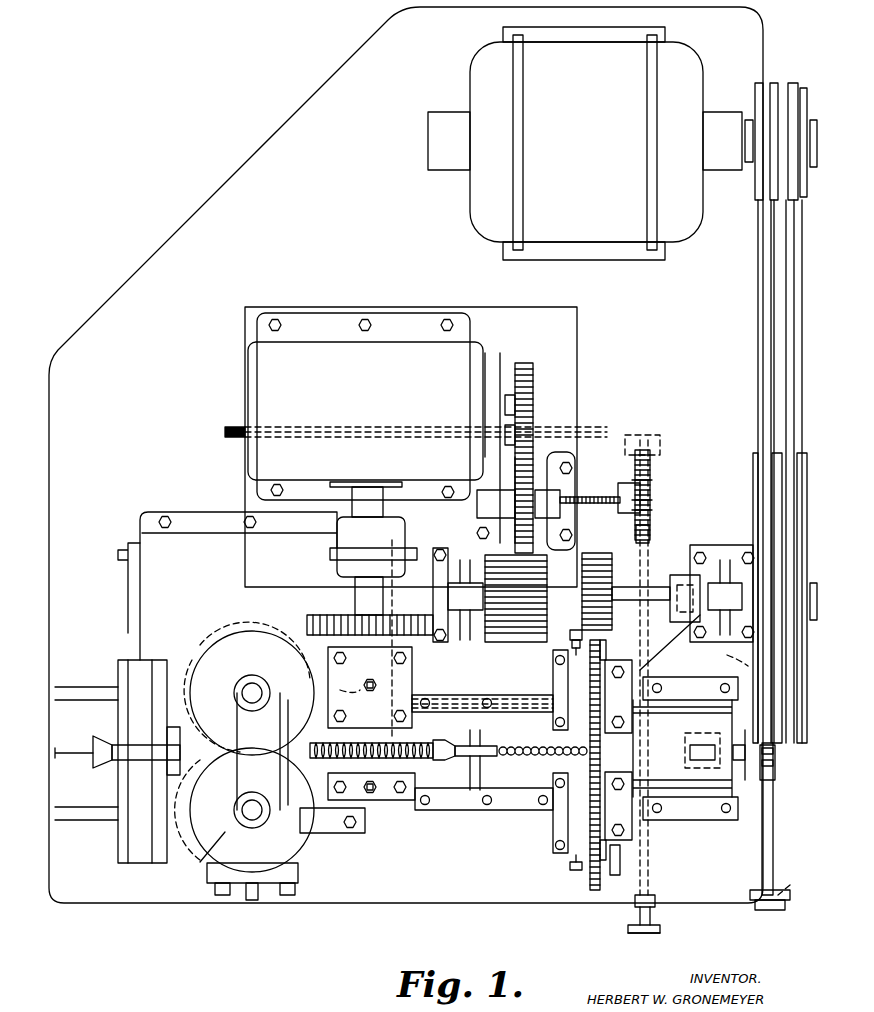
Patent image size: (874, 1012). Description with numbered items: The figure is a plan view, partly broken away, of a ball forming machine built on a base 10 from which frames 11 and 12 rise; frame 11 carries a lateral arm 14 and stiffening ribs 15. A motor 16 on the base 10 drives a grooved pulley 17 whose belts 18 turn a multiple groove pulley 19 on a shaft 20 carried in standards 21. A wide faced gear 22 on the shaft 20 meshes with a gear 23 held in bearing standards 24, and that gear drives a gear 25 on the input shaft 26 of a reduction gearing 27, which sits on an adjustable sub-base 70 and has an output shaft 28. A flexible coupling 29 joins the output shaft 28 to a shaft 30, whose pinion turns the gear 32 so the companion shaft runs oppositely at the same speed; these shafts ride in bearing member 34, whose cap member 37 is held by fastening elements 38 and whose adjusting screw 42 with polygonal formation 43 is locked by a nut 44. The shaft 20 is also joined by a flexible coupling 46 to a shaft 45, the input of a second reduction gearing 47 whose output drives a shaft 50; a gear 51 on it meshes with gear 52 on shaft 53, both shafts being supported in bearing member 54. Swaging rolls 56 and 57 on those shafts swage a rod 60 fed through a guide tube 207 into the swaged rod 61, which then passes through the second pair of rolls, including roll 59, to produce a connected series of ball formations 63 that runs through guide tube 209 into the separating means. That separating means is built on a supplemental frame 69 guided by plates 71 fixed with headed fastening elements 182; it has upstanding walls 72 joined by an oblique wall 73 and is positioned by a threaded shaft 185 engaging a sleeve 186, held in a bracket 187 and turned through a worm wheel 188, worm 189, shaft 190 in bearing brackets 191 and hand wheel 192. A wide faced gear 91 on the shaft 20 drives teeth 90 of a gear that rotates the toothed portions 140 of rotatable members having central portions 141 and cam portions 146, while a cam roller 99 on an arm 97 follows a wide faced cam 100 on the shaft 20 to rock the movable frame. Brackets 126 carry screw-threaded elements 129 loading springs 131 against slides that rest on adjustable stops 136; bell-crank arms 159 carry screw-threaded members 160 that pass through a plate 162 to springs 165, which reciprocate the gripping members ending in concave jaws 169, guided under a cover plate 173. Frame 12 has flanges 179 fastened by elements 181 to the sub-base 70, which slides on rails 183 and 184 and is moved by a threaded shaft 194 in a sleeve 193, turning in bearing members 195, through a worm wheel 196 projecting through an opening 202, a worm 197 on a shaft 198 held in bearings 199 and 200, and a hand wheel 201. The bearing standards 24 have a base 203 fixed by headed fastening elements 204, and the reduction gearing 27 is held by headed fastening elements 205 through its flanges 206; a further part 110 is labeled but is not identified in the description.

The base 10 is at (240, 162).
The frame 11 is at (135, 795).
The frame 12 is at (487, 695).
The lateral arm 14 is at (170, 712).
The ribs 15 is at (88, 686).
The motor 16 is at (472, 200).
The pulley 17 is at (755, 192).
The belts 18 is at (775, 312).
The multiple groove pulley 19 is at (753, 460).
The shaft 20 is at (612, 592).
The standards 21 is at (455, 550).
The wide faced gear 22 is at (540, 585).
The gear 23 is at (566, 458).
The bearing standards 24 is at (485, 490).
The gear 25 is at (530, 430).
The input shaft 26 is at (534, 398).
The reduction gearing 27 is at (265, 382).
The output shaft 28 is at (368, 495).
The flexible coupling 29 is at (337, 553).
The shaft 30 is at (365, 590).
The gear 32 is at (307, 618).
The bearing member 34 is at (400, 670).
The cap member 37 is at (330, 775).
The fastening elements 38 is at (335, 655).
The screw-threaded member 42 is at (252, 902).
The polygonal formation 43 is at (370, 832).
The nut 44 is at (364, 682).
The shaft 45 is at (380, 602).
The flexible coupling 46 is at (442, 552).
The reduction gearing 47 is at (195, 545).
The shaft 50 is at (252, 675).
The gear 51 is at (192, 655).
The gear 52 is at (190, 830).
The shaft 53 is at (262, 815).
The bearing member 54 is at (298, 872).
The roll 56 is at (240, 640).
The roll 57 is at (206, 860).
The roll 59 is at (422, 760).
The bar-like member 60 is at (70, 750).
The swaged rod-like member 61 is at (292, 705).
The series of connected ball formations 63 is at (500, 746).
The supplemental frame 69 is at (735, 790).
The adjustable sub-base 70 is at (560, 345).
The plates 71 is at (700, 692).
The upstanding walls 72 is at (680, 718).
The obliquely extending wall 73 is at (732, 690).
The teeth 90 is at (605, 750).
The wide faced gear 91 is at (615, 575).
The arm 97 is at (682, 645).
The cam roller 99 is at (680, 585).
The wide faced cam 100 is at (685, 575).
The bolt 110 is at (635, 695).
The bracket 126 is at (605, 648).
The screw-threaded headed element 129 is at (600, 640).
The coil compression spring 131 is at (618, 862).
The screw-threaded headed member 136 is at (635, 750).
The circular toothed portion 140 is at (622, 750).
The central portion 141 is at (585, 690).
The cam portion 146 is at (575, 705).
The arms 159 is at (574, 640).
The screw-threaded headed members 160 is at (575, 628).
The plate 162 is at (565, 855).
The coil spring 165 is at (553, 655).
The concave jaw 169 is at (565, 747).
The cover plate 173 is at (553, 665).
The flanges 179 is at (428, 698).
The fastening elements 181 is at (480, 698).
The headed fastening elements 182 is at (685, 690).
The rail 183 is at (232, 427).
The rail 184 is at (343, 689).
The screw-threaded shaft 185 is at (776, 775).
The threaded sleeve 186 is at (693, 745).
The bracket 187 is at (740, 745).
The worm wheel 188 is at (776, 765).
The worm 189 is at (776, 755).
The shaft 190 is at (773, 880).
The bearing brackets 191 is at (766, 769).
The hand wheel 192 is at (750, 923).
The internally threaded sleeve 193 is at (588, 496).
The screw-threaded shaft 194 is at (625, 490).
The bearing members 195 is at (628, 503).
The worm wheel 196 is at (652, 466).
The worm 197 is at (660, 488).
The shaft 198 is at (648, 878).
The bearing 199 is at (660, 435).
The bearing 200 is at (635, 910).
The hand wheel 201 is at (628, 928).
The opening 202 is at (652, 528).
The base 203 is at (492, 480).
The headed fastening elements 204 is at (482, 530).
The headed fastening elements 205 is at (447, 320).
The flanges 206 is at (365, 320).
The guide tube 207 is at (104, 748).
The guide tube 209 is at (455, 743).